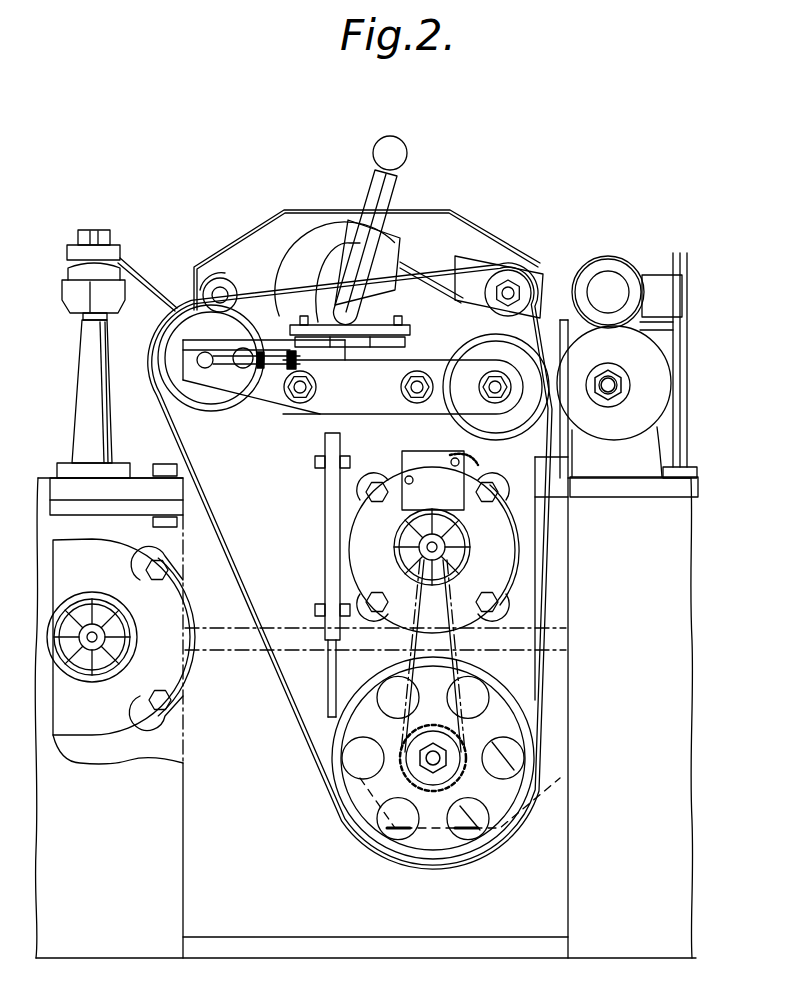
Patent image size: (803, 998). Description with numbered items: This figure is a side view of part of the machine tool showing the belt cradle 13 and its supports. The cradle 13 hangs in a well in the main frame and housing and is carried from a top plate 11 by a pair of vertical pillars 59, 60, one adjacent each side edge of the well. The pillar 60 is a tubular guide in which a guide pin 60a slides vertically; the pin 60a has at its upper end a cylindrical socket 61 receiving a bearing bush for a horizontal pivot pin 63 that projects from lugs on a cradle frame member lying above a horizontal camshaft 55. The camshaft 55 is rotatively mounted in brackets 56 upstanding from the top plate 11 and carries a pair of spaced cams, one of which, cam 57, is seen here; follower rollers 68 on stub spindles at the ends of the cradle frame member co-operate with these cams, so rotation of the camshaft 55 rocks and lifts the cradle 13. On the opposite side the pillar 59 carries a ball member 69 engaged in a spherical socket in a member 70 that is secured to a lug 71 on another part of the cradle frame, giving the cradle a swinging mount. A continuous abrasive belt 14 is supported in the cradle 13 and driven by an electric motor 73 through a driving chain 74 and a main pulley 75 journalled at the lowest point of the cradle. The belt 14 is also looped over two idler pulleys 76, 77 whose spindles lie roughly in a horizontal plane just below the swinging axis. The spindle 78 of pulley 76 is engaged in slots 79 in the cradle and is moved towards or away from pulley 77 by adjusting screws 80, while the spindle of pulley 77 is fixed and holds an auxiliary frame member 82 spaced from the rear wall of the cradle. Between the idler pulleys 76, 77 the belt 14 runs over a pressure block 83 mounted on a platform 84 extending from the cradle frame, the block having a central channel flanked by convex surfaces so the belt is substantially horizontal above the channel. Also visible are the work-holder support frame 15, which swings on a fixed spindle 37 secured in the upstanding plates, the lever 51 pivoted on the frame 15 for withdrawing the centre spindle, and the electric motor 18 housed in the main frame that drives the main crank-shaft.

The top plate 11 is at (137, 465).
The cradle 13 is at (285, 546).
The abrasive belt 14 is at (183, 498).
The work-holder support frame 15 is at (428, 237).
The electric motor 18 is at (187, 657).
The fixed spindle 37 is at (513, 290).
The lever 51 is at (380, 173).
The camshaft 55 is at (603, 397).
The brackets 56 is at (651, 462).
The cam 57 is at (617, 427).
The pillar 59 is at (110, 408).
The pillar 60 is at (683, 382).
The guide pin 60a is at (655, 325).
The cylindrical socket 61 is at (657, 283).
The pivot pin 63 is at (687, 270).
The follower roller 68 is at (598, 262).
The ball member 69 is at (105, 315).
The member 70 is at (133, 266).
The lug 71 is at (107, 252).
The electric motor 73 is at (515, 577).
The driving chain 74 is at (462, 742).
The main pulley 75 is at (512, 800).
The idler pulley 76 is at (222, 385).
The idler pulley 77 is at (460, 402).
The spindle 78 is at (206, 368).
The slots 79 is at (246, 368).
The adjusting screws 80 is at (273, 366).
The auxiliary frame member 82 is at (438, 398).
The pressure block 83 is at (377, 327).
The platform 84 is at (317, 345).